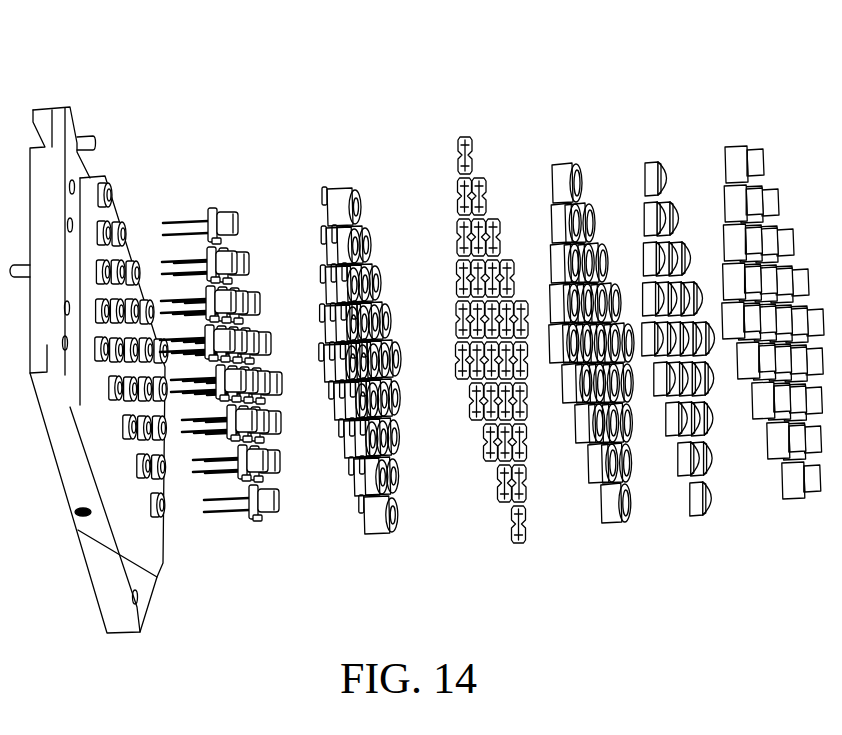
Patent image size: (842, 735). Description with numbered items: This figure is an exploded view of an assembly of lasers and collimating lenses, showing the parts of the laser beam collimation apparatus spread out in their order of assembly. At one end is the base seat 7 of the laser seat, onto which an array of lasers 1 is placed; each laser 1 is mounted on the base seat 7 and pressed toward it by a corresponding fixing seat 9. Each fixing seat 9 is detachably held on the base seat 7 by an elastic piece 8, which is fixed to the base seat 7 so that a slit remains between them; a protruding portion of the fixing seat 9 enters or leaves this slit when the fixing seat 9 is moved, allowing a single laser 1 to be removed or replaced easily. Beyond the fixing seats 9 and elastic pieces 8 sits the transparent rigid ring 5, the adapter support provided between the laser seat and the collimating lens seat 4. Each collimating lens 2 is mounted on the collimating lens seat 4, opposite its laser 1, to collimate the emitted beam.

The base seat 7 is at (50, 108).
The laser 1 is at (200, 212).
The fixing seat 9 is at (333, 200).
The elastic piece 8 is at (463, 140).
The transparent rigid ring 5 is at (563, 165).
The collimating lens 2 is at (653, 158).
The collimating lens seat 4 is at (742, 148).